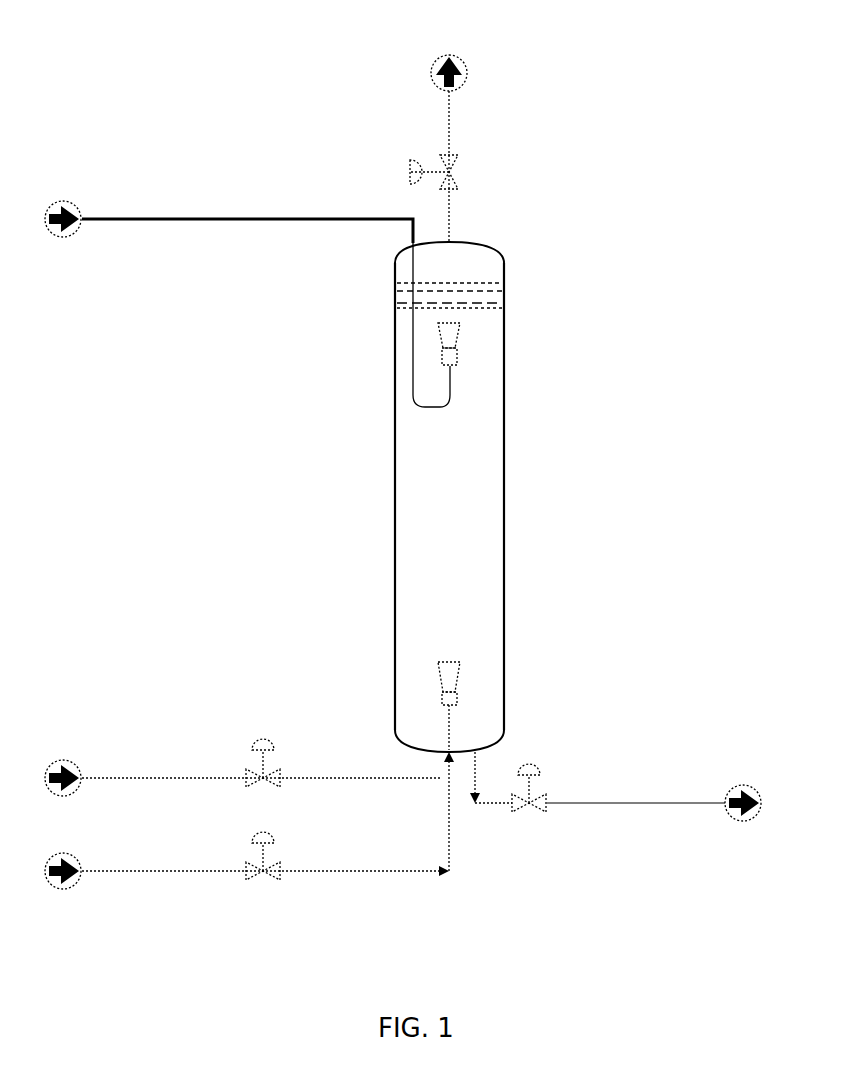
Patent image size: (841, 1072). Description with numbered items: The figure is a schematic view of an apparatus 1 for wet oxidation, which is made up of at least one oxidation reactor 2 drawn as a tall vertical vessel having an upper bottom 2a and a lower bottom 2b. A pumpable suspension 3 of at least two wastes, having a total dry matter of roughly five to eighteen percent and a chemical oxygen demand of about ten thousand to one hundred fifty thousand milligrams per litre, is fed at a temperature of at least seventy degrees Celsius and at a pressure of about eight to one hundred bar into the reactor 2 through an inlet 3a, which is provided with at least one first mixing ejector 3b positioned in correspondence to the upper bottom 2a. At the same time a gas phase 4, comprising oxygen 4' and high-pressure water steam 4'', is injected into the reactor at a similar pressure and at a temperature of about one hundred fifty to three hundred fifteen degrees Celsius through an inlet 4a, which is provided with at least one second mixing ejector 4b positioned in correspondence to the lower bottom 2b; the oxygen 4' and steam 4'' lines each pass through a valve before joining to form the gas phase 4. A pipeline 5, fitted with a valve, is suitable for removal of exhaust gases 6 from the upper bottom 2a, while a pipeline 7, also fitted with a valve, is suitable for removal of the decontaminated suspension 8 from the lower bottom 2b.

The apparatus 1 is at (636, 282).
The oxidation reactor 2 is at (483, 486).
The upper bottom 2a is at (480, 248).
The lower bottom 2b is at (485, 745).
The pumpable suspension 3 is at (220, 222).
The inlet 3a is at (413, 248).
The first mixing ejector 3b is at (458, 341).
The gas phase 4 is at (382, 797).
The inlet 4a is at (445, 752).
The second mixing ejector 4b is at (458, 676).
The oxygen 4' is at (231, 767).
The high-pressure water steam 4'' is at (234, 860).
The pipeline 5 is at (445, 127).
The exhaust gases 6 is at (449, 55).
The pipeline 7 is at (617, 805).
The decontaminated suspension 8 is at (757, 803).